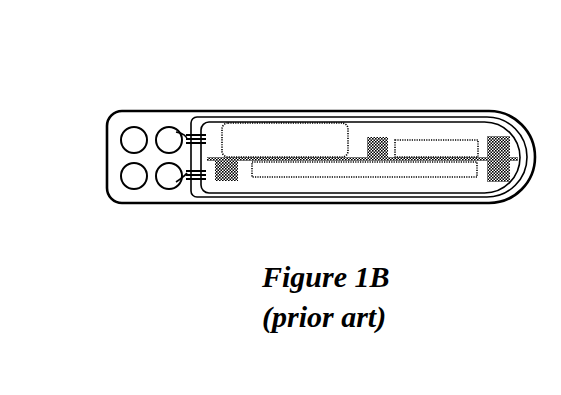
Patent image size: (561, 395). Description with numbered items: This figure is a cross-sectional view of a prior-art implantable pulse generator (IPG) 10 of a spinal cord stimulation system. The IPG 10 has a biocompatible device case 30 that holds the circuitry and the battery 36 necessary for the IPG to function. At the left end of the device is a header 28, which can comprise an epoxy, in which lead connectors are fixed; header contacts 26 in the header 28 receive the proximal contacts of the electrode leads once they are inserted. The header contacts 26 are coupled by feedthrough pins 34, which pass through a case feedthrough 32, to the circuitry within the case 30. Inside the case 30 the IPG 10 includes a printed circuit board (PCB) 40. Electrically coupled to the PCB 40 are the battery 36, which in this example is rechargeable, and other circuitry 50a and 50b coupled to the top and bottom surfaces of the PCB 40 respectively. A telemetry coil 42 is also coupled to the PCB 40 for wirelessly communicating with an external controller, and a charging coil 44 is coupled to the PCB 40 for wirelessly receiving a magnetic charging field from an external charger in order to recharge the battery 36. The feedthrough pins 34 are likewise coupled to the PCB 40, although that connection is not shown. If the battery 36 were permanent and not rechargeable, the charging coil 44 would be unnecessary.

The implantable pulse generator 10 is at (166, 44).
The header contacts 26 is at (121, 138).
The header 28 is at (148, 110).
The device case 30 is at (521, 123).
The case feedthrough 32 is at (190, 178).
The feedthrough pins 34 is at (180, 123).
The battery 36 is at (285, 140).
The printed circuit board 40 is at (490, 162).
The telemetry coil 42 is at (378, 137).
The charging coil 44 is at (227, 182).
The other circuitry 50a is at (442, 140).
The other circuitry 50b is at (365, 178).